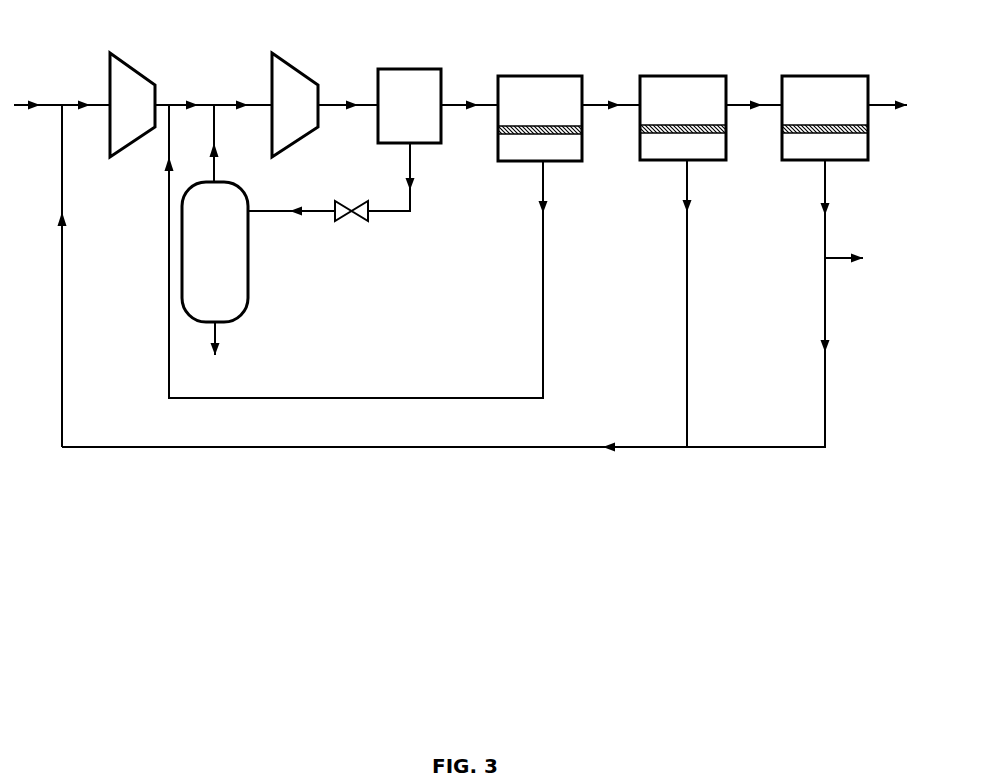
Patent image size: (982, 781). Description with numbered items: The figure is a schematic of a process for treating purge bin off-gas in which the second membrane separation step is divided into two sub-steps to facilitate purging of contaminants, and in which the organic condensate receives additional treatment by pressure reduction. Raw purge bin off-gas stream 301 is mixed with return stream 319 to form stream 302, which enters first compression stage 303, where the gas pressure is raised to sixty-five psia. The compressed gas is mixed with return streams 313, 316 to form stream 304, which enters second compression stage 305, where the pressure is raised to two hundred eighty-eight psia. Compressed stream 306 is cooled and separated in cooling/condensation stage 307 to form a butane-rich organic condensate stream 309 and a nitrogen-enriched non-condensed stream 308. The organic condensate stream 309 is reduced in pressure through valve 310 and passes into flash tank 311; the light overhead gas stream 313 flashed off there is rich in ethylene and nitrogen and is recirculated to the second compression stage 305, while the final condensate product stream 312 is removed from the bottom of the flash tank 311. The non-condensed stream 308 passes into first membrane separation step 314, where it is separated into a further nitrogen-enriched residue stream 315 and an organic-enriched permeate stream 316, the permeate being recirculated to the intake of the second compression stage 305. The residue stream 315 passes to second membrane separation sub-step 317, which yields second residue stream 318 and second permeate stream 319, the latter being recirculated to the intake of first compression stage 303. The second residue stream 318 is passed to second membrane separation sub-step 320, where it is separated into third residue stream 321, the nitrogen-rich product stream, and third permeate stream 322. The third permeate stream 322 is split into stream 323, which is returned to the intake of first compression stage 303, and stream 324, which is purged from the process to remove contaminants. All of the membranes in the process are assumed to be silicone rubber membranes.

The raw purge bin off-gas stream 301 is at (62, 120).
The stream 302 is at (80, 262).
The first compression stage 303 is at (121, 62).
The stream 304 is at (213, 94).
The second compression stage 305 is at (283, 62).
The compressed stream 306 is at (348, 119).
The cooling/condensation stage 307 is at (417, 69).
The non-condensed stream 308 is at (469, 119).
The organic condensate stream 309 is at (414, 177).
The valve 310 is at (358, 221).
The flash tank 311 is at (248, 268).
The final condensate product stream 312 is at (214, 354).
The light overhead gas stream 313 is at (235, 143).
The first membrane separation step 314 is at (529, 76).
The residue stream 315 is at (611, 119).
The permeate stream 316 is at (377, 251).
The second membrane separation sub-step 317 is at (670, 76).
The second residue stream 318 is at (754, 117).
The second permeate stream 319 is at (396, 306).
The second membrane separation sub-step 320 is at (813, 76).
The third residue stream 321 is at (891, 117).
The third permeate stream 322 is at (846, 209).
The stream 323 is at (779, 352).
The stream 324 is at (863, 259).